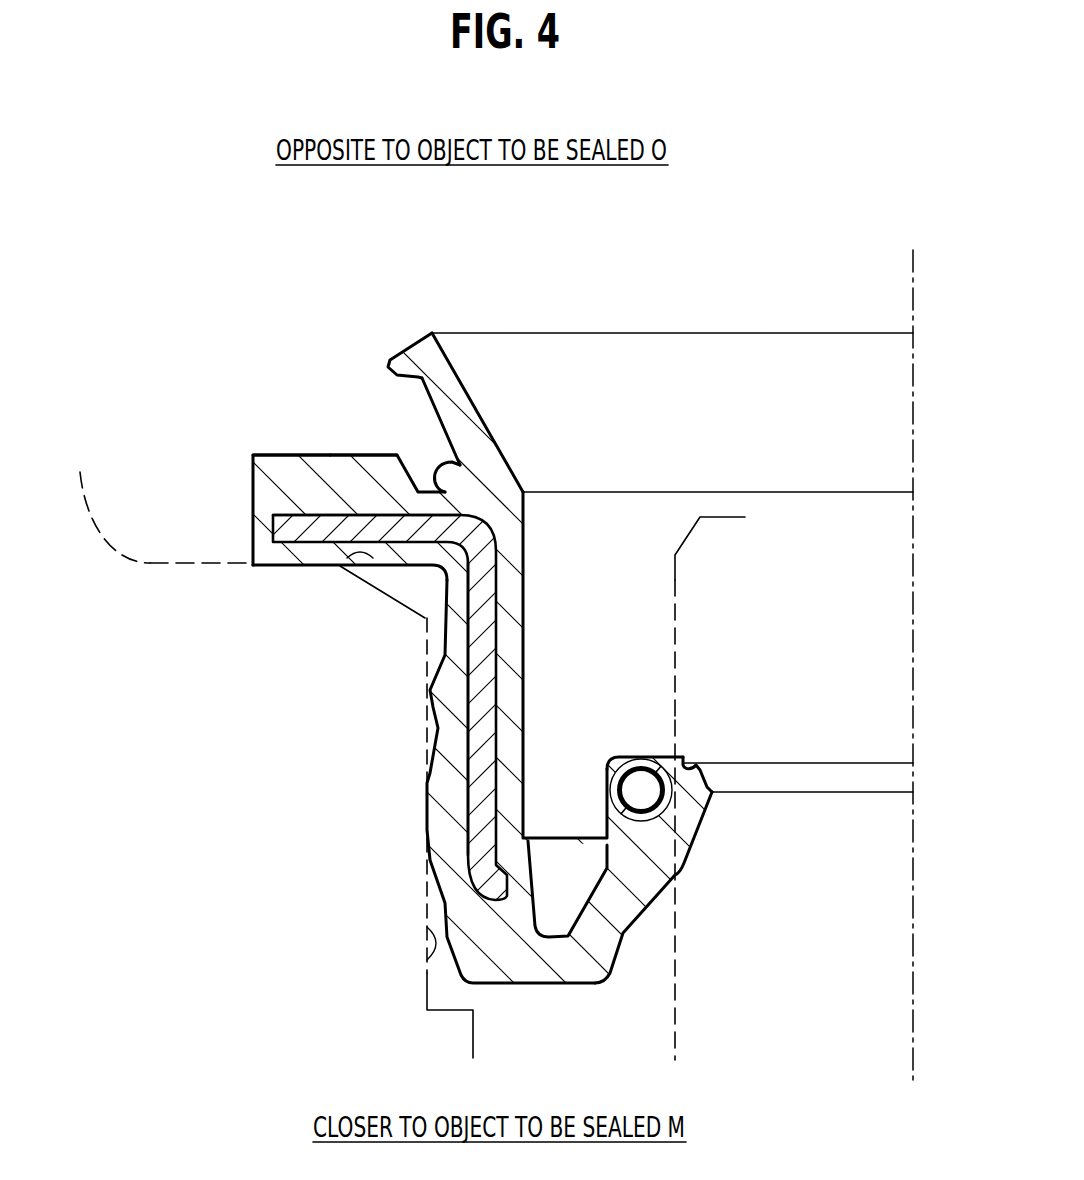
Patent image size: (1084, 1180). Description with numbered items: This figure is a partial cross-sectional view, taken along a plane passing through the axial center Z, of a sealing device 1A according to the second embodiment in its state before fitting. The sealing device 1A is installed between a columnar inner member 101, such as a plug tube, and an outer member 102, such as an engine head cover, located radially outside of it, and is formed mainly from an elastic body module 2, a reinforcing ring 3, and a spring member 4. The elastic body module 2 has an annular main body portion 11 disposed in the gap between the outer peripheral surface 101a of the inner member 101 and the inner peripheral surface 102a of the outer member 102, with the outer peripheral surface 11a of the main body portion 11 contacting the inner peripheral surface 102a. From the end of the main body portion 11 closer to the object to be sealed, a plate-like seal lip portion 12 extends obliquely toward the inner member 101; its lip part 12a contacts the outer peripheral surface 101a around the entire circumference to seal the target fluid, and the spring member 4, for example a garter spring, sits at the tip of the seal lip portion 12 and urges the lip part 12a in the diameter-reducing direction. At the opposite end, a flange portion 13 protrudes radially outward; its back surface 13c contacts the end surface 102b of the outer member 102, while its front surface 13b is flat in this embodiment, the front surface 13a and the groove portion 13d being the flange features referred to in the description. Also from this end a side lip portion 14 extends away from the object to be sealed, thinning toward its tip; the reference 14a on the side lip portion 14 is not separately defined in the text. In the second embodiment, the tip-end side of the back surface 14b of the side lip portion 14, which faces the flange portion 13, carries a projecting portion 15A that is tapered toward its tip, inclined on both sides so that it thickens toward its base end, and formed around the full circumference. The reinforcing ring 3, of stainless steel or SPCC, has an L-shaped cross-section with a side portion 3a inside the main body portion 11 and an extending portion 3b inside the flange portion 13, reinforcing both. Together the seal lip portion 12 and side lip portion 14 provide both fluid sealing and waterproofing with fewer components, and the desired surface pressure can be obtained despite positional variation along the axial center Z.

The sealing device 1A is at (750, 325).
The elastic body module 2 is at (418, 685).
The reinforcing ring 3 is at (465, 738).
The side portion 3a is at (477, 778).
The extending portion 3b is at (323, 533).
The spring member 4 is at (650, 822).
The main body portion 11 is at (510, 788).
The outer peripheral surface of main body portion 11a is at (427, 815).
The seal lip portion 12 is at (608, 930).
The lip part 12a is at (716, 794).
The flange portion 13 is at (265, 487).
The front surface of flange portion 13a is at (267, 453).
The front surface of flange portion 13b is at (333, 453).
The back surface of flange portion 13c is at (270, 572).
The groove portion 13d is at (461, 467).
The side lip portion 14 is at (453, 392).
The tip surface of side lip 14a is at (538, 358).
The back surface of side lip portion 14b is at (443, 427).
The projecting portion 15A is at (397, 370).
The inner member 101 is at (675, 635).
The outer peripheral surface of inner member 101a is at (675, 712).
The outer member 102 is at (180, 563).
The inner peripheral surface of outer member 102a is at (413, 960).
The end surface of outer member 102b is at (235, 563).
The axial center Z is at (913, 652).